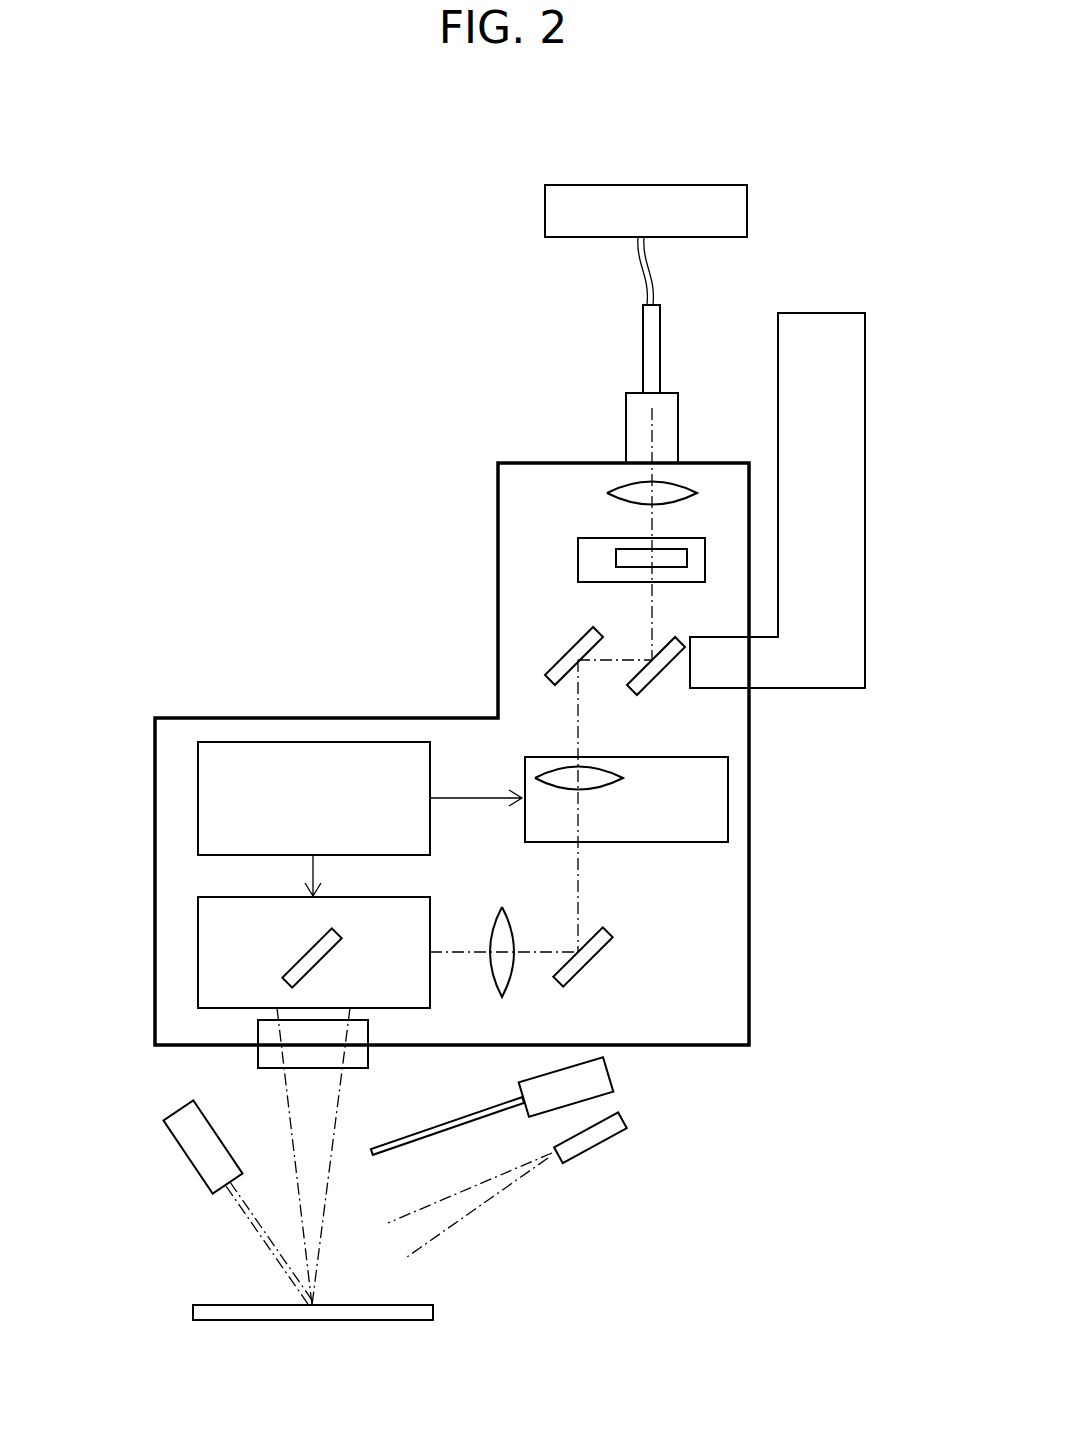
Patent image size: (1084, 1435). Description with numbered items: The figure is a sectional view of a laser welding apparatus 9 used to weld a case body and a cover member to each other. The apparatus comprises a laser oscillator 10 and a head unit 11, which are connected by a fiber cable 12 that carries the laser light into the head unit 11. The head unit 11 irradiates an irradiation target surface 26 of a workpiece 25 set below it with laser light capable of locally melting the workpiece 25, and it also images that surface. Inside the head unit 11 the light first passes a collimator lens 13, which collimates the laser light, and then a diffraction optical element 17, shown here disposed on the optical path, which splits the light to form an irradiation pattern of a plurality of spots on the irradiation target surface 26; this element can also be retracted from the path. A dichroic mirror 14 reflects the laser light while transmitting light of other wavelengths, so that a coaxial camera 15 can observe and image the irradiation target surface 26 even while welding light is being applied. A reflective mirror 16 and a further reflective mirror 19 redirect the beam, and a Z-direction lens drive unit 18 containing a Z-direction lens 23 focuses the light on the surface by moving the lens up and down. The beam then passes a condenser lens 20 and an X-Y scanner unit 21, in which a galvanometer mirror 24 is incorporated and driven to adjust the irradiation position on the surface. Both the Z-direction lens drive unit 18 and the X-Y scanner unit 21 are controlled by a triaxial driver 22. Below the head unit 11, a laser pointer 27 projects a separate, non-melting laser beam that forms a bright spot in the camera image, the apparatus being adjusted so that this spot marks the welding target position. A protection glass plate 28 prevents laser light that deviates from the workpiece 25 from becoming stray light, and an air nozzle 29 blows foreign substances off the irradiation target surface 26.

The laser welding apparatus 9 is at (264, 349).
The laser oscillator 10 is at (727, 190).
The head unit 11 is at (750, 902).
The fiber cable 12 is at (655, 293).
The collimator lens 13 is at (617, 490).
The dichroic mirror 14 is at (645, 690).
The coaxial camera 15 is at (855, 445).
The reflective mirror 16 is at (553, 666).
The diffraction optical element 17 is at (593, 561).
The Z-direction lens drive unit 18 is at (715, 825).
The reflective mirror 19 is at (572, 975).
The condenser lens 20 is at (513, 983).
The X-Y scanner unit 21 is at (208, 958).
The triaxial driver 22 is at (210, 759).
The Z-direction lens 23 is at (555, 778).
The galvanometer mirror 24 is at (300, 941).
The workpiece 25 is at (407, 1320).
The irradiation target surface 26 is at (400, 1305).
The laser pointer 27 is at (203, 1173).
The protection glass plate 28 is at (427, 1128).
The air nozzle 29 is at (578, 1145).